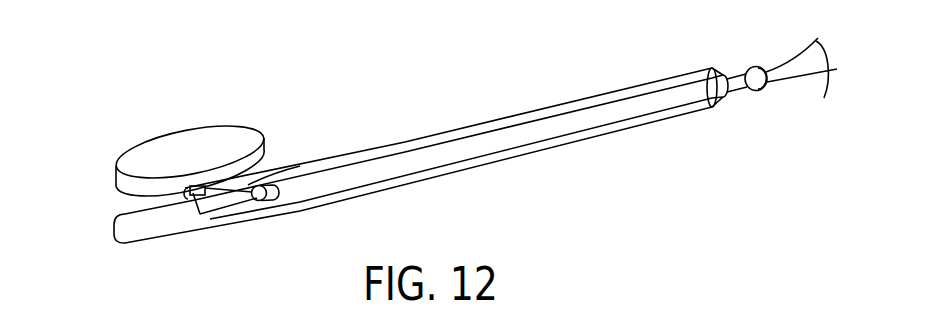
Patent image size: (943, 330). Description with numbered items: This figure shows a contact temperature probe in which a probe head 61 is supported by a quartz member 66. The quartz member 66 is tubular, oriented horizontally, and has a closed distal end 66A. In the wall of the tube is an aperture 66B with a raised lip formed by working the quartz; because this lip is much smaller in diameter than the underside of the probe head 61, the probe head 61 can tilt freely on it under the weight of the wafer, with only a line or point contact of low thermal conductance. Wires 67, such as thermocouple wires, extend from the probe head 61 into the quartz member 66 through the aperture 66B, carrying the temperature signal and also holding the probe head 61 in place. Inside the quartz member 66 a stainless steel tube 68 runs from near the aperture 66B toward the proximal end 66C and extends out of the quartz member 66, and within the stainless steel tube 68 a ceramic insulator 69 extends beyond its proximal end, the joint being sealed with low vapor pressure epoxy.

The probe head 61 is at (216, 130).
The quartz member 66 is at (469, 125).
The distal end 66A is at (116, 240).
The aperture 66B is at (182, 188).
The proximal end 66C is at (712, 68).
The wires 67 is at (268, 169).
The stainless steel tube 68 is at (400, 156).
The ceramic insulator 69 is at (268, 200).